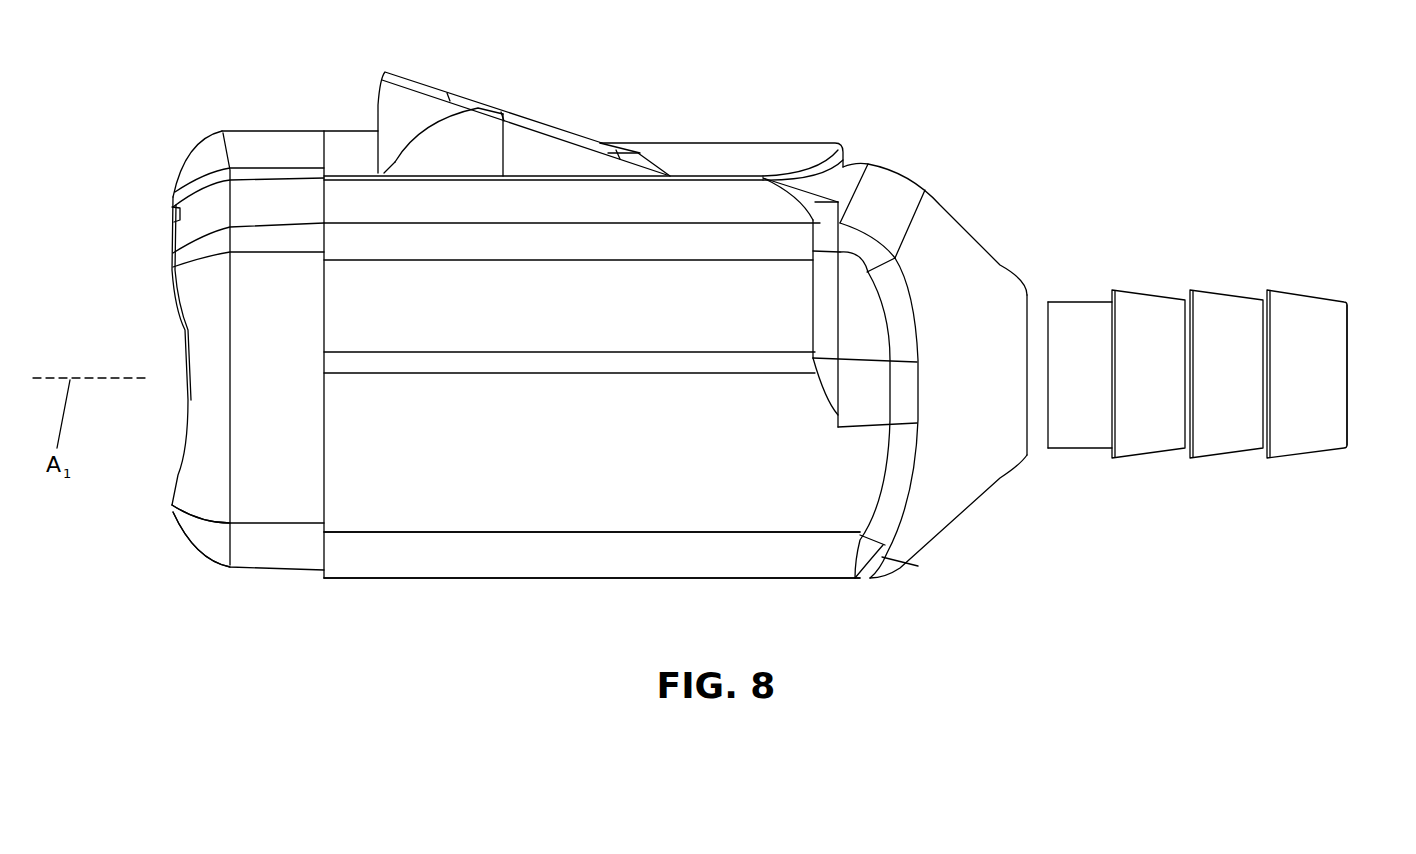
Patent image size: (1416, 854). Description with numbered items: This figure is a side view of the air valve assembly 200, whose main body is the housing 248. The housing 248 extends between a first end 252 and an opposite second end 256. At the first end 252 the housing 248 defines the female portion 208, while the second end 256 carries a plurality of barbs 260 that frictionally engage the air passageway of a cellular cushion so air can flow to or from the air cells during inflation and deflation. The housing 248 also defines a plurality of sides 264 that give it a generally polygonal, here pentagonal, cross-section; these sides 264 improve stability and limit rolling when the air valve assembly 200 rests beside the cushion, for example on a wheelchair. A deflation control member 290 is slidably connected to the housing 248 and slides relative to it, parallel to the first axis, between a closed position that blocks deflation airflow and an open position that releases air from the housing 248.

The air valve assembly 200 is at (993, 150).
The female portion 208 is at (155, 287).
The deflation control member 290 is at (532, 122).
The housing 248 is at (920, 508).
The first end 252 is at (173, 520).
The second end 256 is at (1347, 340).
The plurality of barbs 260 is at (1283, 312).
The plurality of sides 264 is at (483, 512).